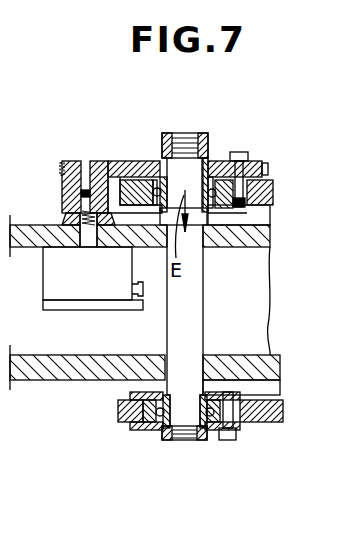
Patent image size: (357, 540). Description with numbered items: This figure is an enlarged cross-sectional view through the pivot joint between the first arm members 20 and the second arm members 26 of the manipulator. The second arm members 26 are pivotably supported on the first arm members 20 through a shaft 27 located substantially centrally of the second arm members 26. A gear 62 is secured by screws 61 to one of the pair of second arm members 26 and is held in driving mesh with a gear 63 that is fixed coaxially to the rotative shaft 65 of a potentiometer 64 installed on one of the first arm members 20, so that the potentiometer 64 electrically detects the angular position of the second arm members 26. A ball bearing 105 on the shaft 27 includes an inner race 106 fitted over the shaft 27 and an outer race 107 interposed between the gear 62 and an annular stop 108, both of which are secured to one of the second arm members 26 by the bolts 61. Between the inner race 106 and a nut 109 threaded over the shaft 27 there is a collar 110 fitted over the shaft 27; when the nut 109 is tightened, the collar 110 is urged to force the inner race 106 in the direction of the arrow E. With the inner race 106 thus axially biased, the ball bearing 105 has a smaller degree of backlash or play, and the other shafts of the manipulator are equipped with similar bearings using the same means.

The first arm members 20 is at (272, 245).
The second arm members 26 is at (277, 203).
The shaft 27 is at (195, 330).
The screws 61 is at (275, 190).
The gear 62 is at (250, 157).
The gear 63 is at (72, 163).
The potentiometer 64 is at (100, 287).
The rotative shaft 65 is at (103, 163).
The ball bearing 105 is at (220, 159).
The inner race 106 is at (210, 210).
The outer race 107 is at (148, 180).
The annular stop 108 is at (273, 218).
The nut 109 is at (200, 133).
The collar 110 is at (206, 160).